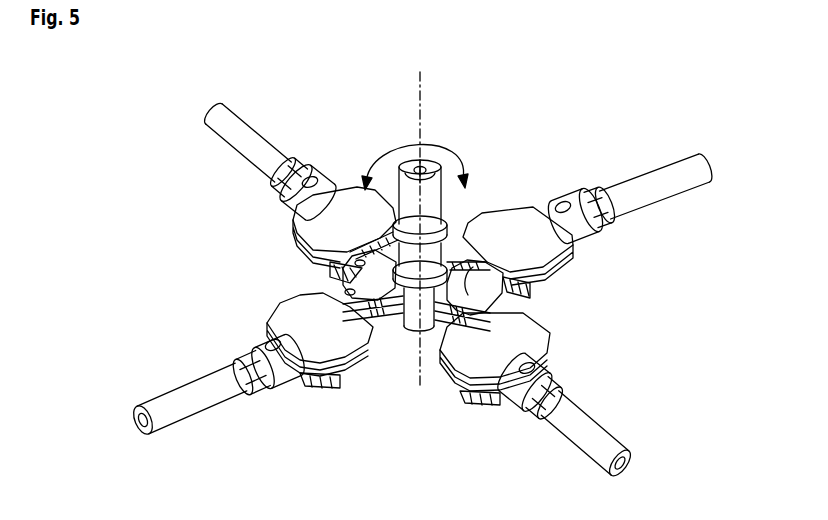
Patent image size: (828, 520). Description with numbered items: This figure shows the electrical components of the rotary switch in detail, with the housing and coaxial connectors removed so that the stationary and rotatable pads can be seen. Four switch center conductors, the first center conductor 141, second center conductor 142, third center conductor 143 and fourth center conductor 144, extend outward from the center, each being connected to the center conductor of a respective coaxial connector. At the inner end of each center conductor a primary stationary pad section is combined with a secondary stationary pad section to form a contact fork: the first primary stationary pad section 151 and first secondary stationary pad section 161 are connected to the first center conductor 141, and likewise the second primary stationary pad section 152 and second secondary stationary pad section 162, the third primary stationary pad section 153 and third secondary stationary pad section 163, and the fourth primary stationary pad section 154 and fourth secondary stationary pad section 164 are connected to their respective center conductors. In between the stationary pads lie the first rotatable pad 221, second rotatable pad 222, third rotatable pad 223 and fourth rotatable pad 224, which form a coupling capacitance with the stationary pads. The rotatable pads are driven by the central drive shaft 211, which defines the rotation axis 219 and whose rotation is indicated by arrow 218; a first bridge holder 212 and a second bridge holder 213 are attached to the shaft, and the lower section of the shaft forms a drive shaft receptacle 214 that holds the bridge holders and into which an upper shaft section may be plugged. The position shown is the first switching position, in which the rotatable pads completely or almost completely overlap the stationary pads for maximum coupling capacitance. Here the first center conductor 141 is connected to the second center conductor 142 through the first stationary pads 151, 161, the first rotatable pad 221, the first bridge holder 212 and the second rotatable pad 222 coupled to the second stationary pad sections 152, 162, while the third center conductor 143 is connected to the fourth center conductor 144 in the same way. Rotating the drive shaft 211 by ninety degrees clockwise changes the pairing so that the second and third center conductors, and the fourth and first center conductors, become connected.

The first center conductor 141 is at (677, 170).
The second center conductor 142 is at (600, 447).
The third center conductor 143 is at (188, 403).
The fourth center conductor 144 is at (238, 133).
The first primary stationary pad section 151 is at (523, 204).
The second primary stationary pad section 152 is at (455, 383).
The third primary stationary pad section 153 is at (342, 378).
The fourth primary stationary pad section 154 is at (360, 193).
The first secondary stationary pad section 161 is at (518, 291).
The second secondary stationary pad section 162 is at (480, 400).
The third secondary stationary pad section 163 is at (307, 383).
The fourth secondary stationary pad section 164 is at (322, 277).
The drive shaft 211 is at (426, 167).
The first bridge holder 212 is at (380, 263).
The second bridge holder 213 is at (472, 278).
The drive shaft receptacle 214 is at (413, 318).
The arrow 218 is at (400, 146).
The rotation axis 219 is at (423, 81).
The first rotatable pad 221 is at (573, 273).
The second rotatable pad 222 is at (540, 328).
The third rotatable pad 223 is at (280, 305).
The fourth rotatable pad 224 is at (292, 246).